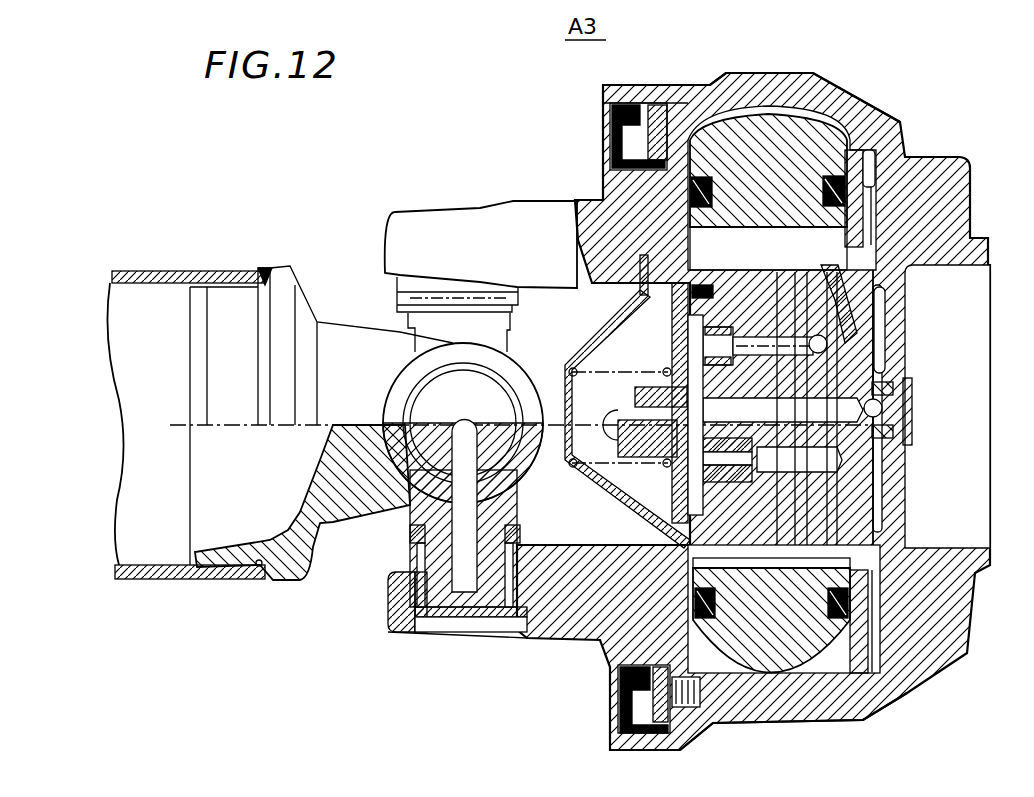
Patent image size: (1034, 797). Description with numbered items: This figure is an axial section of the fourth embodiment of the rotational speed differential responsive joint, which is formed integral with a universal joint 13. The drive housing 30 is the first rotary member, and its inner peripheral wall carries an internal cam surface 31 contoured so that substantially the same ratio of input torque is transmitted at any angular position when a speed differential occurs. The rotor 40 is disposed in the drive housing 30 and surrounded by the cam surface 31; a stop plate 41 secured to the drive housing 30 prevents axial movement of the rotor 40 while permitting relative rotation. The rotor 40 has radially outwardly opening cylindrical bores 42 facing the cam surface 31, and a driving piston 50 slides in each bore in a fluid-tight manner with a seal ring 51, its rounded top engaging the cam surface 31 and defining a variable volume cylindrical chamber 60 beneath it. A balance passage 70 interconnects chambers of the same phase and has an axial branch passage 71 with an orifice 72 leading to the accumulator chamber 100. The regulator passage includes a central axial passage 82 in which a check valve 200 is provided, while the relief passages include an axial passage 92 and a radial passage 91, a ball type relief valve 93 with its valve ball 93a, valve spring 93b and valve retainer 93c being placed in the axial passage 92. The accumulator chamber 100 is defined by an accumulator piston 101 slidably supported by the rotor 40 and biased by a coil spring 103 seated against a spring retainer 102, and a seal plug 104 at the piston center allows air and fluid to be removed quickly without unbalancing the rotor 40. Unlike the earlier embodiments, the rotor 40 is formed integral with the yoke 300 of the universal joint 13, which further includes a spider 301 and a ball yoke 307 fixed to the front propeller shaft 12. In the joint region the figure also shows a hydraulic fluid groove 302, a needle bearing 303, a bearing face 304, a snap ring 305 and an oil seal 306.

The front propeller shaft 12 is at (230, 590).
The universal joint 13 is at (445, 195).
The drive housing 30 is at (965, 165).
The internal cam surface 31 is at (818, 108).
The rotor 40 is at (612, 186).
The stop plate 41 is at (668, 720).
The cylindrical bore 42 is at (905, 215).
The driving piston 50 is at (767, 120).
The seal ring 51 is at (703, 185).
The cylindrical chamber 60 is at (765, 240).
The balance passage 70 is at (790, 548).
The axial branch passage 71 is at (775, 472).
The orifice 72 is at (748, 472).
The central axial passage 82 is at (755, 420).
The radial passage 91 is at (884, 305).
The axial passage 92 is at (862, 356).
The relief valve 93 is at (746, 328).
The valve ball 93a is at (835, 335).
The valve spring 93b is at (758, 335).
The valve retainer 93c is at (640, 300).
The accumulator chamber 100 is at (656, 508).
The accumulator piston 101 is at (660, 485).
The spring retainer 102 is at (605, 320).
The coil spring 103 is at (616, 370).
The seal plug 104 is at (580, 430).
The check valve 200 is at (906, 430).
The yoke 300 is at (556, 636).
The spider 301 is at (442, 610).
The hydraulic fluid groove 302 is at (486, 570).
The needle bearing 303 is at (390, 614).
The bearing face 304 is at (405, 585).
The snap ring 305 is at (412, 632).
The oil seal 306 is at (405, 538).
The ball yoke 307 is at (328, 330).